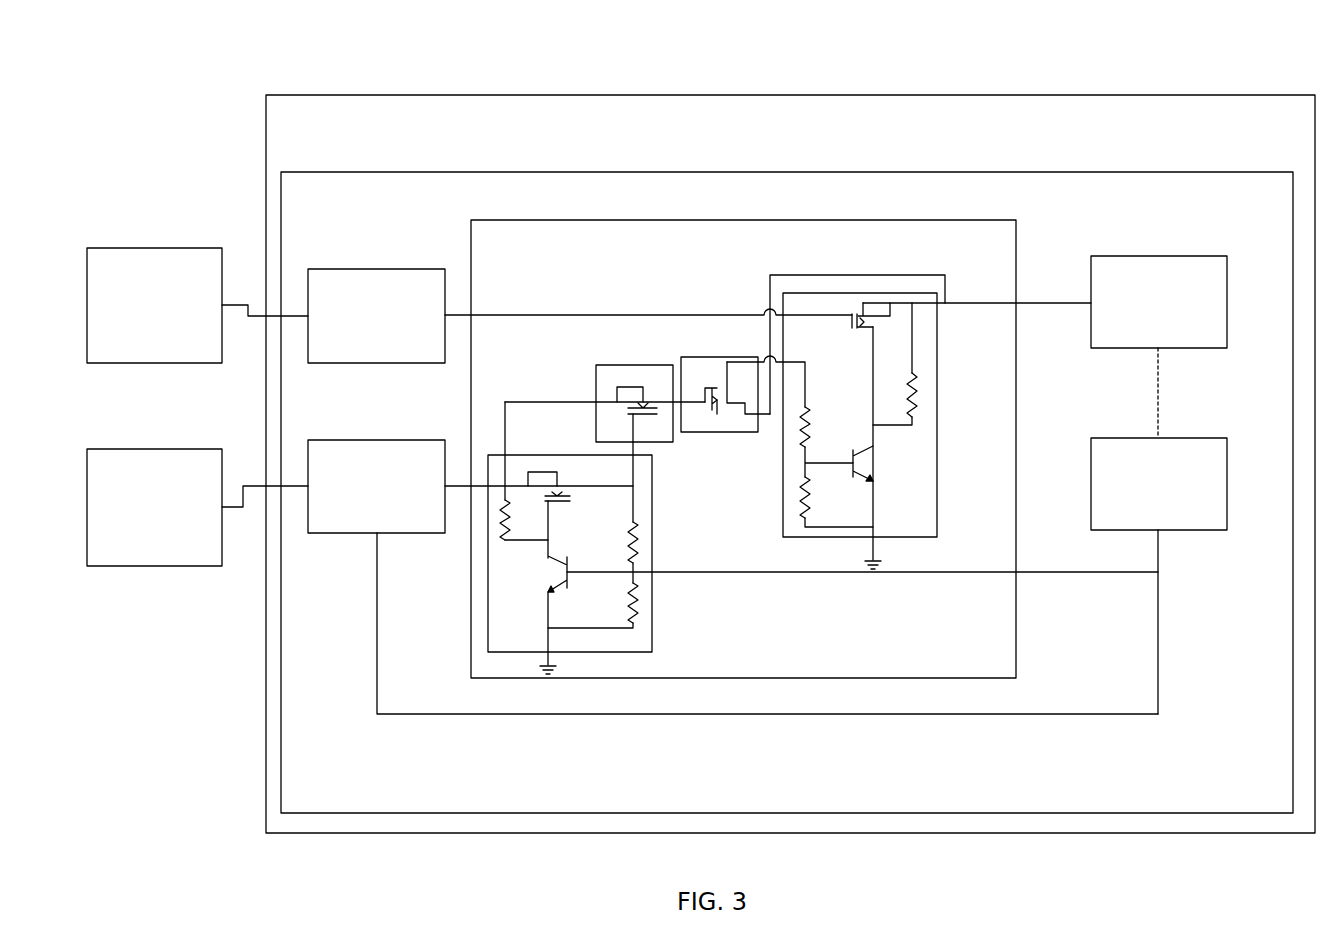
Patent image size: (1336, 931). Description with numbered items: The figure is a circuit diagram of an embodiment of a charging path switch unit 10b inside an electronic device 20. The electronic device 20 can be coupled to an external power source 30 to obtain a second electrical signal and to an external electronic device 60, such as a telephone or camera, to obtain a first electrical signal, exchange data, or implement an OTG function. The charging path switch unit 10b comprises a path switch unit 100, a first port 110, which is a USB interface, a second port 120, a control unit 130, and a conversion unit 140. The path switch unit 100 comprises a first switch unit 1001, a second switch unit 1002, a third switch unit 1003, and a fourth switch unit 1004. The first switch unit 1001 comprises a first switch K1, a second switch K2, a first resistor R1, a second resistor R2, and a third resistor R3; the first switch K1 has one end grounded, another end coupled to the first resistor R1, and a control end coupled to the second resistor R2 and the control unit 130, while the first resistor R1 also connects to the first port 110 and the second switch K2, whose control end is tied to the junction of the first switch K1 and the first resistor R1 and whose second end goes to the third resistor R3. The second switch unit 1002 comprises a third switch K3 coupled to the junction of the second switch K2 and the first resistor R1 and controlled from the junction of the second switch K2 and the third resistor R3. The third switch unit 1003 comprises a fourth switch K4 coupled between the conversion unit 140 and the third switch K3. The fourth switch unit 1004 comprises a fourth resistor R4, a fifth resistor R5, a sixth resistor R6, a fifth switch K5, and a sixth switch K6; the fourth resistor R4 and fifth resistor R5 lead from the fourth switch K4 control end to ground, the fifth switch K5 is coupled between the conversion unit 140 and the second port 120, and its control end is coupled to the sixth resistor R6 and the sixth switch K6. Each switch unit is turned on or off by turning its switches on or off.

The electronic device 20 is at (578, 92).
The charging path switch unit 10b is at (607, 170).
The path switch unit 100 is at (768, 220).
The external power source 30 is at (153, 247).
The external electronic device 60 is at (153, 449).
The first port 110 is at (353, 438).
The second port 120 is at (375, 269).
The control unit 130 is at (1228, 472).
The conversion unit 140 is at (1228, 290).
The first switch unit 1001 is at (610, 538).
The second switch unit 1002 is at (605, 384).
The third switch unit 1003 is at (813, 355).
The fourth switch unit 1004 is at (901, 431).
The first switch K1 is at (542, 587).
The second switch K2 is at (559, 481).
The third switch K3 is at (605, 414).
The fourth switch K4 is at (735, 340).
The fifth switch K5 is at (862, 334).
The sixth switch K6 is at (880, 464).
The first resistor R1 is at (524, 471).
The second resistor R2 is at (593, 605).
The third resistor R3 is at (614, 512).
The fourth resistor R4 is at (826, 442).
The fifth resistor R5 is at (836, 502).
The sixth resistor R6 is at (937, 380).